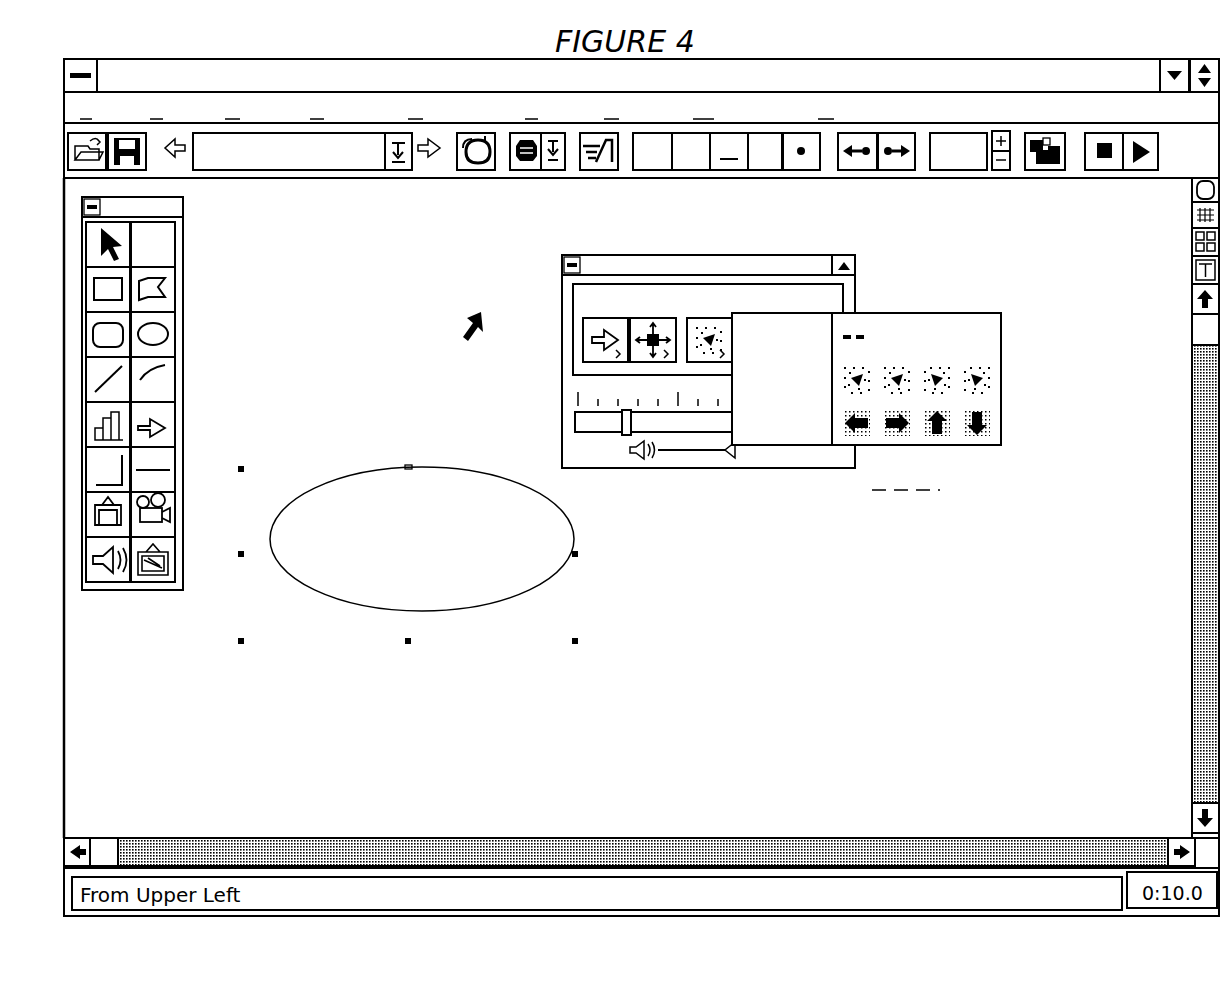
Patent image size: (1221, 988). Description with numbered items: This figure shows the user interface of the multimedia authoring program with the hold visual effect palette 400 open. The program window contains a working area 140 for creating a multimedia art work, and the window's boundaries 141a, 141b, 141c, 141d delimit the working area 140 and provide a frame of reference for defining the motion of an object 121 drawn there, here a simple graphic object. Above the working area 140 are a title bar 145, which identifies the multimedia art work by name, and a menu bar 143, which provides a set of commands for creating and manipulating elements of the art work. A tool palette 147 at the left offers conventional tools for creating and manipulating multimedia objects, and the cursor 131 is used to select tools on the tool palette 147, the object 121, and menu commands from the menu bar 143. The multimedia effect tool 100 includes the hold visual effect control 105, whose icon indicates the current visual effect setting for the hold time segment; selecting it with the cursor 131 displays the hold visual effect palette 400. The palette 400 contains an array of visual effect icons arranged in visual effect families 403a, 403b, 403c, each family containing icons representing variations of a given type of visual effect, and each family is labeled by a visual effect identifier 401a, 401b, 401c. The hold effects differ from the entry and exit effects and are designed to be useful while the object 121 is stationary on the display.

The multimedia effect tool 100 is at (670, 347).
The hold visual effect control 105 is at (694, 320).
The multimedia object 121 is at (441, 498).
The cursor 131 is at (455, 324).
The working area 140 is at (311, 292).
The boundary 141a is at (68, 690).
The boundary 141b is at (624, 837).
The boundary 141c is at (1192, 680).
The boundary 141d is at (1165, 173).
The menu bar 143 is at (929, 116).
The title bar 145 is at (822, 85).
The tool palette 147 is at (182, 268).
The hold visual effect palette 400 is at (893, 364).
The visual effect identifier 401a is at (800, 328).
The visual effect identifier 401b is at (770, 370).
The visual effect identifier 401c is at (770, 440).
The visual effect family 403a is at (960, 341).
The visual effect family 403b is at (995, 376).
The visual effect family 403c is at (932, 456).